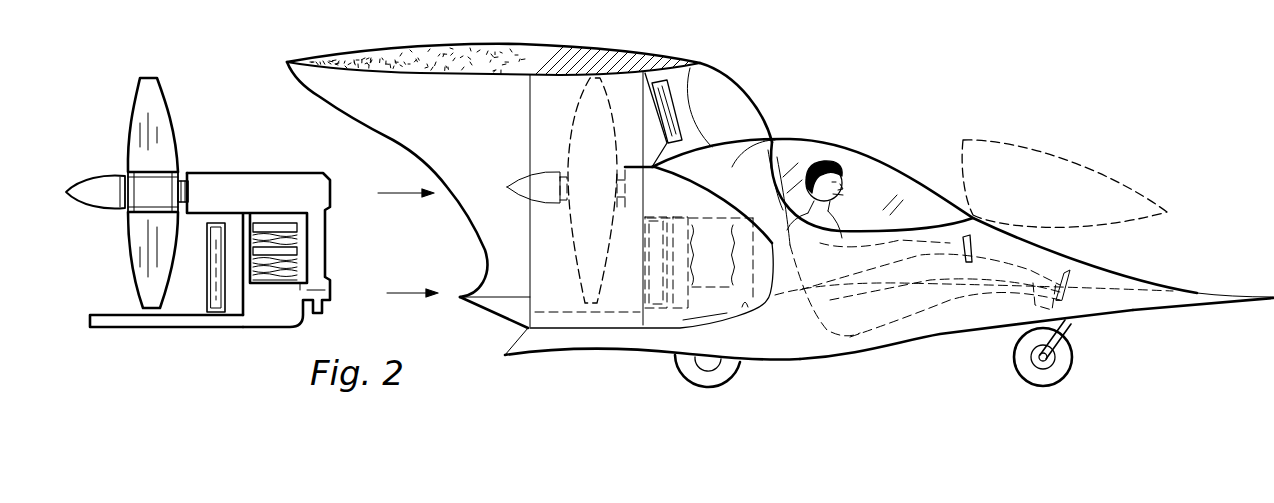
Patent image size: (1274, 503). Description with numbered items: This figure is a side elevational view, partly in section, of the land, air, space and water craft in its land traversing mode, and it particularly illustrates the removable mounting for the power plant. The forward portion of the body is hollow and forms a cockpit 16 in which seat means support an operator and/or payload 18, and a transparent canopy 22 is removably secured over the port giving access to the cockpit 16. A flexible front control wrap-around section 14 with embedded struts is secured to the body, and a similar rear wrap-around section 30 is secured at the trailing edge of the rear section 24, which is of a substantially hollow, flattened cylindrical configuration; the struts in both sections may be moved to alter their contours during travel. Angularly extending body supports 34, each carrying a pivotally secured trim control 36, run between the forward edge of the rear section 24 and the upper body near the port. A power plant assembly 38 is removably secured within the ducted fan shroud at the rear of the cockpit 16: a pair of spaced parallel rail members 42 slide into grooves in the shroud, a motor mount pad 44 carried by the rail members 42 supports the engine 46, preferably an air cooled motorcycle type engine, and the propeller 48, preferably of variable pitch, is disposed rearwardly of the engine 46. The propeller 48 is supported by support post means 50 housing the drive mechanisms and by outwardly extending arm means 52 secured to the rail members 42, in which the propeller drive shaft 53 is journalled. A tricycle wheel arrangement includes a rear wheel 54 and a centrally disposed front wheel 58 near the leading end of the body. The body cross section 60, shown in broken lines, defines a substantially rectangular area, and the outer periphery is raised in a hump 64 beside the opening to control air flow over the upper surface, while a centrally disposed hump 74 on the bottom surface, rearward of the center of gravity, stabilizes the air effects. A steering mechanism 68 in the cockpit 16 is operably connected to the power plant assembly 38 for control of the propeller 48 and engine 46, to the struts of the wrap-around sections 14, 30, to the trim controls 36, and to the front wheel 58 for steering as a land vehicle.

The front control wrap-around section 14 is at (1197, 292).
The cockpit 16 is at (661, 234).
The operator and/or payload 18 is at (823, 162).
The transparent canopy 22 is at (887, 178).
The rear section 24 is at (603, 53).
The rear wrap-around section 30 is at (403, 48).
The body supports 34 is at (683, 93).
The trim control 36 is at (673, 130).
The power plant assembly 38 is at (120, 258).
The rail members 42 is at (128, 325).
The motor mount pad 44 is at (277, 305).
The engine 46 is at (293, 237).
The propeller 48 is at (142, 110).
The support post means 50 is at (317, 268).
The arm means 52 is at (227, 177).
The propeller drive shaft 53 is at (183, 178).
The rear wheel 54 is at (727, 367).
The front wheel 58 is at (1070, 362).
The cross section 60 is at (930, 334).
The hump 64 is at (760, 143).
The steering mechanism 68 is at (973, 245).
The hump 74 is at (828, 358).